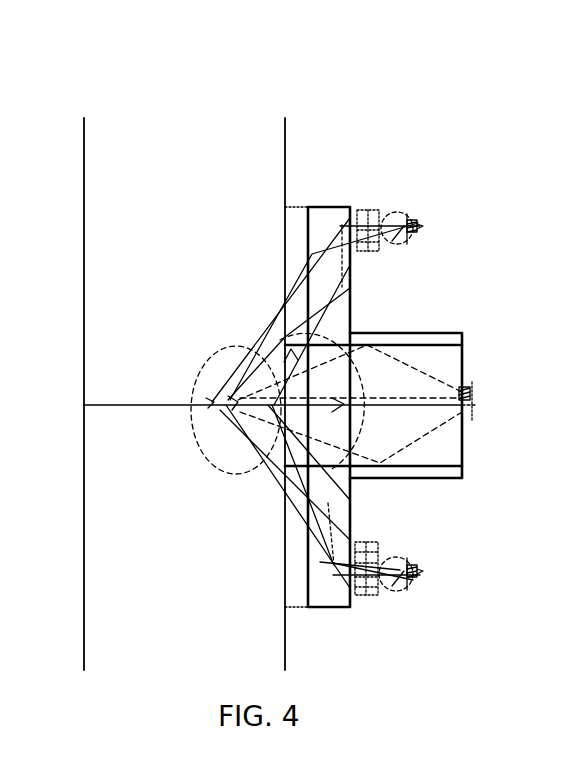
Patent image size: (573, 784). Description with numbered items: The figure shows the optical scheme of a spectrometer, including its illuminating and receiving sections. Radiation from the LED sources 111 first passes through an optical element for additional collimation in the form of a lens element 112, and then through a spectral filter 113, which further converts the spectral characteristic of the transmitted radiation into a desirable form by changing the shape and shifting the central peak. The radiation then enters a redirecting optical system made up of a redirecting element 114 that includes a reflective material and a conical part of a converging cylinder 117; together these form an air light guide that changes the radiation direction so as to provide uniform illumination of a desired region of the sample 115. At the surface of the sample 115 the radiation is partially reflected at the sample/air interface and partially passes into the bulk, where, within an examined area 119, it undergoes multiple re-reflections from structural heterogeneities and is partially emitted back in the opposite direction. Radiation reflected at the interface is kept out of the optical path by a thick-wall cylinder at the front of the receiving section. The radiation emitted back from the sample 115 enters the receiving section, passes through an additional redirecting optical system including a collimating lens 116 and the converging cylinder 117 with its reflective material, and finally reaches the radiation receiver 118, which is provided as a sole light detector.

The LED sources 111 is at (415, 220).
The lens element 112 is at (395, 214).
The spectral filter 113 is at (372, 211).
The redirecting element 114 is at (318, 207).
The sample 115 is at (122, 315).
The collimating lens 116 is at (350, 478).
The converging cylinder 117 is at (402, 340).
The radiation receiver 118 is at (472, 390).
The examined area 119 is at (207, 438).